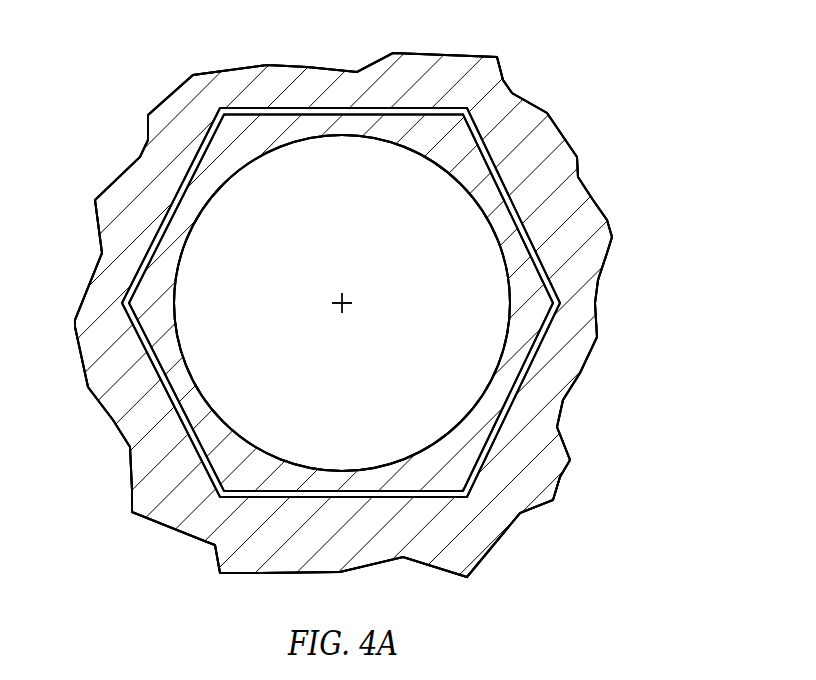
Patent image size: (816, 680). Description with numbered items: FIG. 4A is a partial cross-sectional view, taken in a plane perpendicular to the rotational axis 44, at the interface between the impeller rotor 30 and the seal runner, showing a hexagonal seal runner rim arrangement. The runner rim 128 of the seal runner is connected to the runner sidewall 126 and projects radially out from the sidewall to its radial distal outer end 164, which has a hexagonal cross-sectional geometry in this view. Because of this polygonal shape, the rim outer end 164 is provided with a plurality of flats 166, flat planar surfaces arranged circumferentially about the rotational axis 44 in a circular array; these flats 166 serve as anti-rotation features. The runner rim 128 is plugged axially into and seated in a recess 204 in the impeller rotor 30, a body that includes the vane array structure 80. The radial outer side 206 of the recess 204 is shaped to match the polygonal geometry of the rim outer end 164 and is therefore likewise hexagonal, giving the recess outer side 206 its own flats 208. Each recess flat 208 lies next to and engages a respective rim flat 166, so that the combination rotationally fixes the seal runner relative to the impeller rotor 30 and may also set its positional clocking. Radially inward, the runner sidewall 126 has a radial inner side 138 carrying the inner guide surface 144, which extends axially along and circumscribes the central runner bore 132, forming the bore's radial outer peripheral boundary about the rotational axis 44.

The impeller rotor 30 is at (566, 90).
The vane array structure 80 is at (343, 315).
The radial distal outer end 164 is at (350, 73).
The flats 166 is at (433, 107).
The recess 204 is at (518, 430).
The radial outer side 206 is at (519, 230).
The flats 208 is at (398, 113).
The runner rim 128 is at (252, 130).
The runner sidewall 126 is at (247, 163).
The radial inner side 138 is at (352, 133).
The inner guide surface 144 is at (342, 303).
The rotational axis 44 is at (340, 304).
The runner bore 132 is at (352, 268).